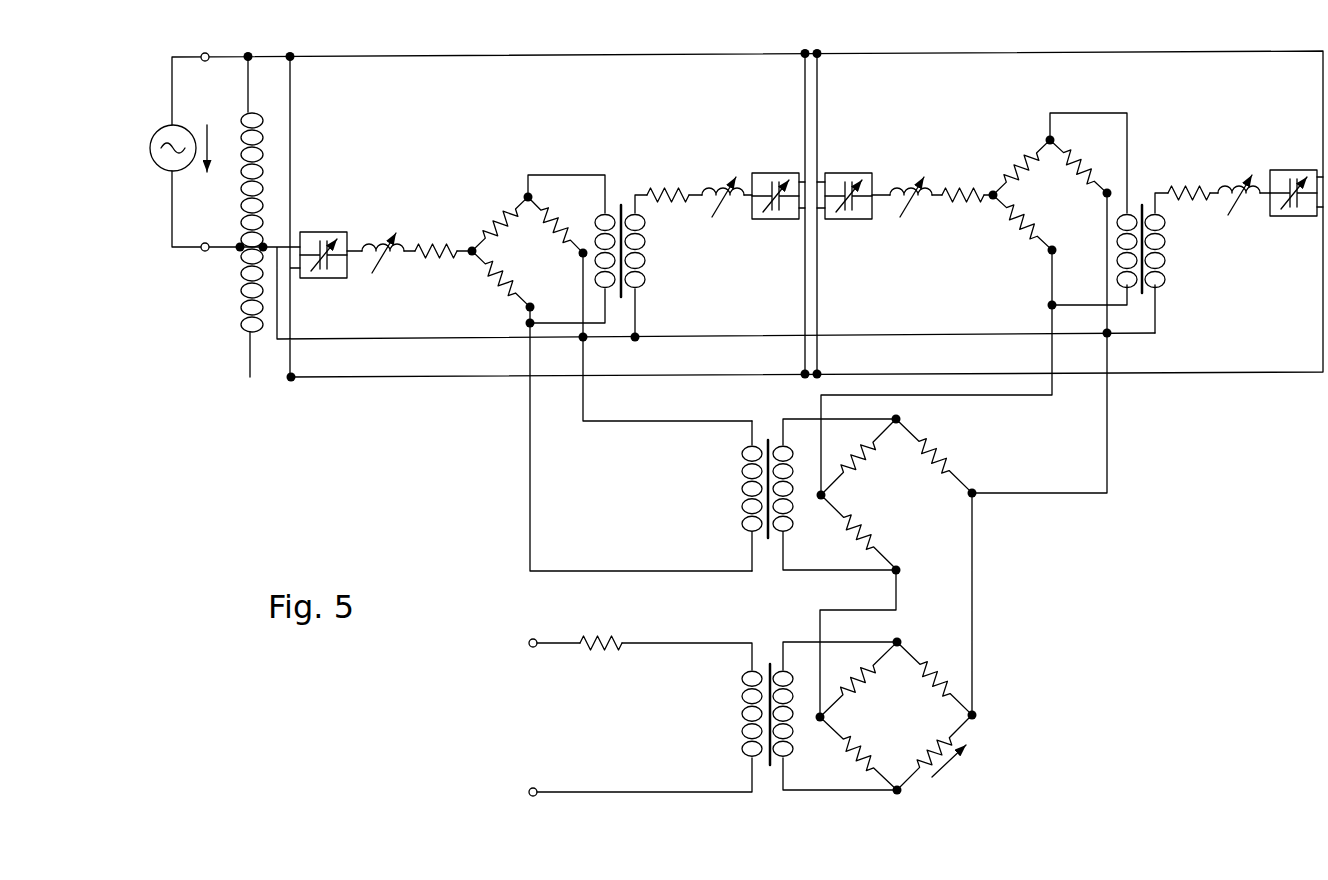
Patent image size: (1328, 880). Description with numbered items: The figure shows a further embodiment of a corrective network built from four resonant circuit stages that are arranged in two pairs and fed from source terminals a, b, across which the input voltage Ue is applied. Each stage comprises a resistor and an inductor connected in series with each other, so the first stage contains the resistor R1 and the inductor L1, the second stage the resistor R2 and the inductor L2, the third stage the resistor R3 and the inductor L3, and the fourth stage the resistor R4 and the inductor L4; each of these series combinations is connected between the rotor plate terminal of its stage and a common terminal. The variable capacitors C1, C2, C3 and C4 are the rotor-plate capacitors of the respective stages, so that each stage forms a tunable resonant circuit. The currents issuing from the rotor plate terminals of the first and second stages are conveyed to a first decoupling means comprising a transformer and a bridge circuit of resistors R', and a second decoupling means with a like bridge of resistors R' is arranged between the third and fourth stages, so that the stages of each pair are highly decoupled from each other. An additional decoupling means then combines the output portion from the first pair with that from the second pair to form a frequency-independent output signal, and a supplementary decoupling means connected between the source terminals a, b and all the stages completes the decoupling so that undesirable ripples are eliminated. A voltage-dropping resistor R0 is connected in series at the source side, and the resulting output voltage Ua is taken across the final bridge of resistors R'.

The source terminal a is at (207, 88).
The source terminal b is at (207, 284).
The input voltage Ue is at (222, 148).
The variable capacitor C1 is at (342, 232).
The inductor L1 is at (376, 239).
The resistor R1 is at (431, 240).
The bridge circuit resistors R' is at (789, 448).
The resistor R2 is at (657, 188).
The inductor L2 is at (706, 188).
The variable capacitor C2 is at (762, 177).
The variable capacitor C3 is at (856, 177).
The inductor L3 is at (902, 188).
The resistor R3 is at (955, 188).
The resistor R4 is at (1172, 186).
The inductor L4 is at (1226, 186).
The variable capacitor C4 is at (1309, 170).
The voltage-dropping resistor R0 is at (598, 634).
The output voltage Ua is at (958, 771).